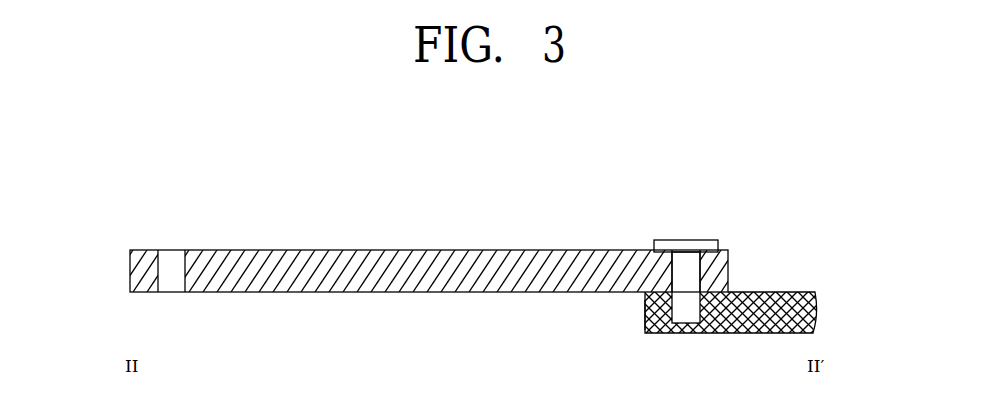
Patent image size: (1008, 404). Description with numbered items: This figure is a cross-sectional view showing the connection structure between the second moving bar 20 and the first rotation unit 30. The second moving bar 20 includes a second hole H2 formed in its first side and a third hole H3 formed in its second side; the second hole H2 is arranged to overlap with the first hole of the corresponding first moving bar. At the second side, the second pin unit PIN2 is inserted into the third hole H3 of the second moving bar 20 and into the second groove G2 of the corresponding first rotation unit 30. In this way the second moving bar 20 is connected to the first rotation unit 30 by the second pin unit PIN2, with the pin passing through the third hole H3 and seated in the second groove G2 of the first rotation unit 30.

The second moving bar 20 is at (400, 264).
The second hole H2 is at (173, 252).
The third hole H3 is at (671, 270).
The second pin unit PIN2 is at (689, 240).
The first rotation unit 30 is at (745, 335).
The second groove G2 is at (657, 335).